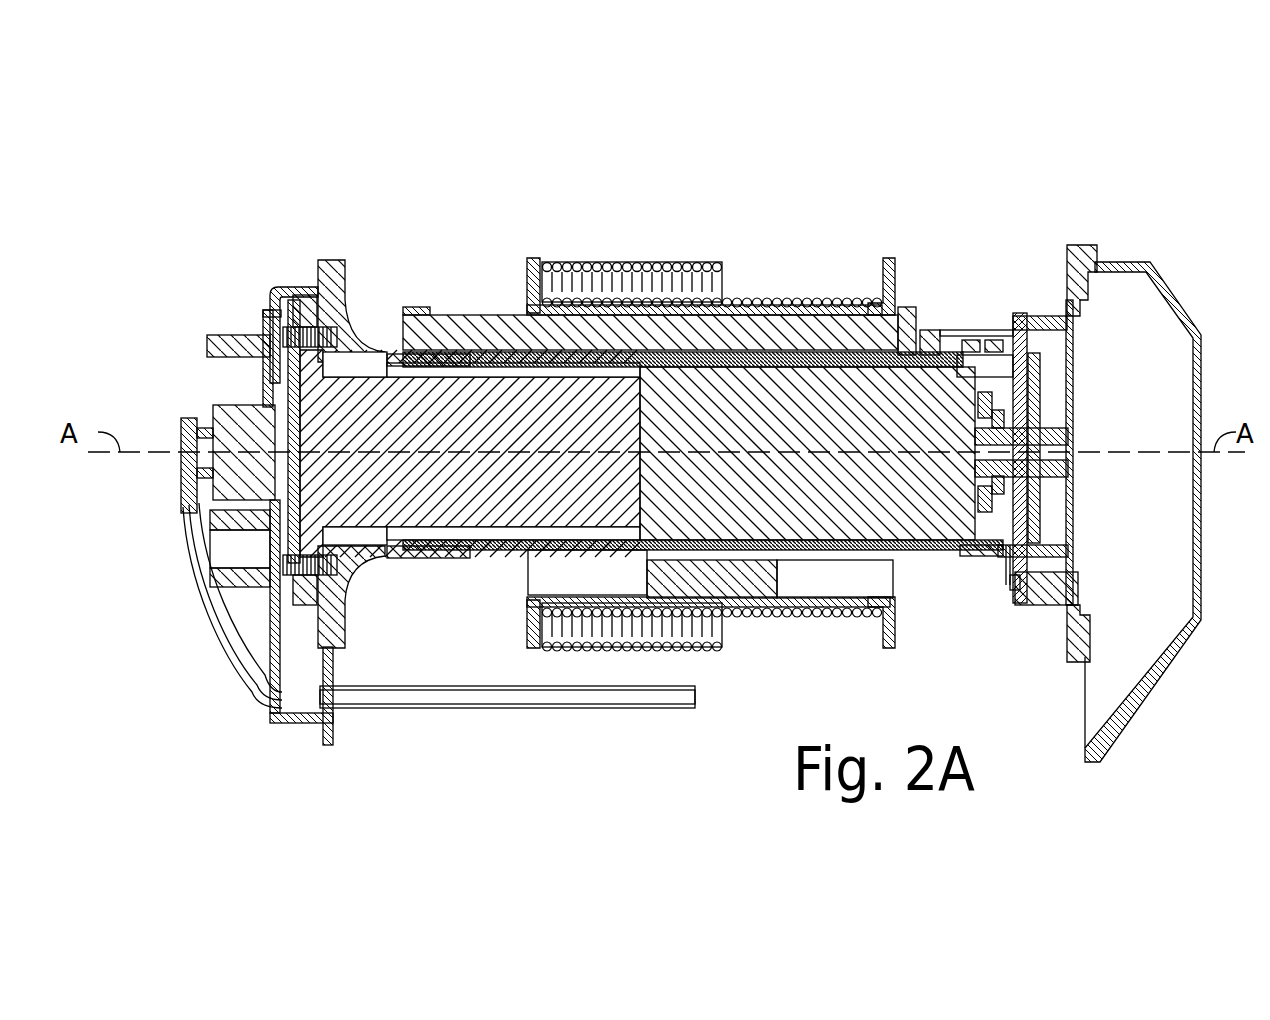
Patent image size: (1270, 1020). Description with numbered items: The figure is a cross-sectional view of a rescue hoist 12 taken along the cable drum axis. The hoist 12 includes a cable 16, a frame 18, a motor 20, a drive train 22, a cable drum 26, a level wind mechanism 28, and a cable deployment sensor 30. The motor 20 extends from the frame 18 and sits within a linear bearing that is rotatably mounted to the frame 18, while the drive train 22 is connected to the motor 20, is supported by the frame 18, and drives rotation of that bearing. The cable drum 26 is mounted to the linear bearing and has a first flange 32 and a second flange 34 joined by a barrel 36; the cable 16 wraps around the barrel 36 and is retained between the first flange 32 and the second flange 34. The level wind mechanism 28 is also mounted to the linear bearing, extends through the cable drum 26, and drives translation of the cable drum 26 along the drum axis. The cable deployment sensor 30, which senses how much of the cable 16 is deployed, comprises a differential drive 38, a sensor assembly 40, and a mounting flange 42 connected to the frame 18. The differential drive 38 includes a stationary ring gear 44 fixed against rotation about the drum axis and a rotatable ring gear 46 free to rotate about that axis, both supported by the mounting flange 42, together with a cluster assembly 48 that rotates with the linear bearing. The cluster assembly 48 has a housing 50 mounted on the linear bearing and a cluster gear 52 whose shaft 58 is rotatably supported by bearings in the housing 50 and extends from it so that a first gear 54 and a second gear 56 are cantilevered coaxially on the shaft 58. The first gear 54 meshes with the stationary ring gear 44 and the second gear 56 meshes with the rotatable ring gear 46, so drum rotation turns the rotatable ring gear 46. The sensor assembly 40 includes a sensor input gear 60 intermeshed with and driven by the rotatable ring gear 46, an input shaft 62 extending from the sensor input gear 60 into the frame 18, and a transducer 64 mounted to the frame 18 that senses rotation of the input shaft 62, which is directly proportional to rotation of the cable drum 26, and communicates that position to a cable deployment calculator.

The hoist 12 is at (354, 164).
The cable 16 is at (719, 262).
The frame 18 is at (1080, 250).
The motor 20 is at (953, 522).
The drive train 22 is at (511, 535).
The cable drum 26 is at (868, 568).
The level wind mechanism 28 is at (445, 312).
The cable deployment sensor (CDS) 30 is at (988, 272).
The first flange 32 is at (524, 283).
The second flange 34 is at (889, 290).
The barrel 36 is at (778, 298).
The differential drive 38 is at (972, 312).
The sensor assembly 40 is at (1002, 590).
The mounting flange 42 is at (1000, 330).
The stationary ring gear 44 is at (980, 556).
The rotatable ring gear 46 is at (990, 555).
The cluster assembly 48 is at (934, 330).
The housing 50 is at (845, 303).
The cluster gear 52 is at (1000, 330).
The first gear 54 is at (975, 330).
The second gear 56 is at (985, 330).
The shaft 58 is at (952, 328).
The sensor input gear 60 is at (998, 582).
The input shaft 62 is at (1013, 573).
The transducer 64 is at (1077, 572).